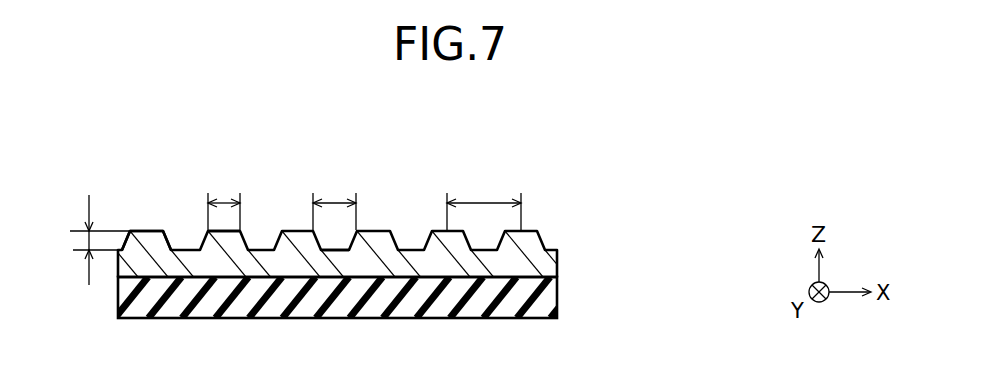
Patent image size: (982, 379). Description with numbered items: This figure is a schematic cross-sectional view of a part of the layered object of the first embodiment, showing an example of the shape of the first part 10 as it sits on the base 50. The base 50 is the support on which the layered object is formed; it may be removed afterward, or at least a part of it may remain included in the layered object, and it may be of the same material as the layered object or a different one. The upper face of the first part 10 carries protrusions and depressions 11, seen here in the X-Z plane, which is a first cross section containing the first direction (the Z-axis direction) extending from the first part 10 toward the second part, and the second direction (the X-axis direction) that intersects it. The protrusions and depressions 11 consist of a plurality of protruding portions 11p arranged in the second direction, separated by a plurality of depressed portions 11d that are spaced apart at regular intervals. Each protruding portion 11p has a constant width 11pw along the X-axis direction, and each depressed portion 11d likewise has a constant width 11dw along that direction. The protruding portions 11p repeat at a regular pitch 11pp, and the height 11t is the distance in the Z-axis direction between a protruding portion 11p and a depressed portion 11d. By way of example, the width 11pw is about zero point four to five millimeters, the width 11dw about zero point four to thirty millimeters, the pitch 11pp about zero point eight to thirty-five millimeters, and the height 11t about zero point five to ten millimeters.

The first part 10 is at (521, 232).
The base 50 is at (545, 300).
The protrusions and depressions 11 is at (148, 232).
The protruding portion 11p is at (224, 232).
The depressed portion 11d is at (333, 251).
The height 11t is at (81, 240).
The width of protruding portion 11pw is at (224, 198).
The width of depressed portion 11dw is at (332, 198).
The pitch 11pp is at (484, 199).